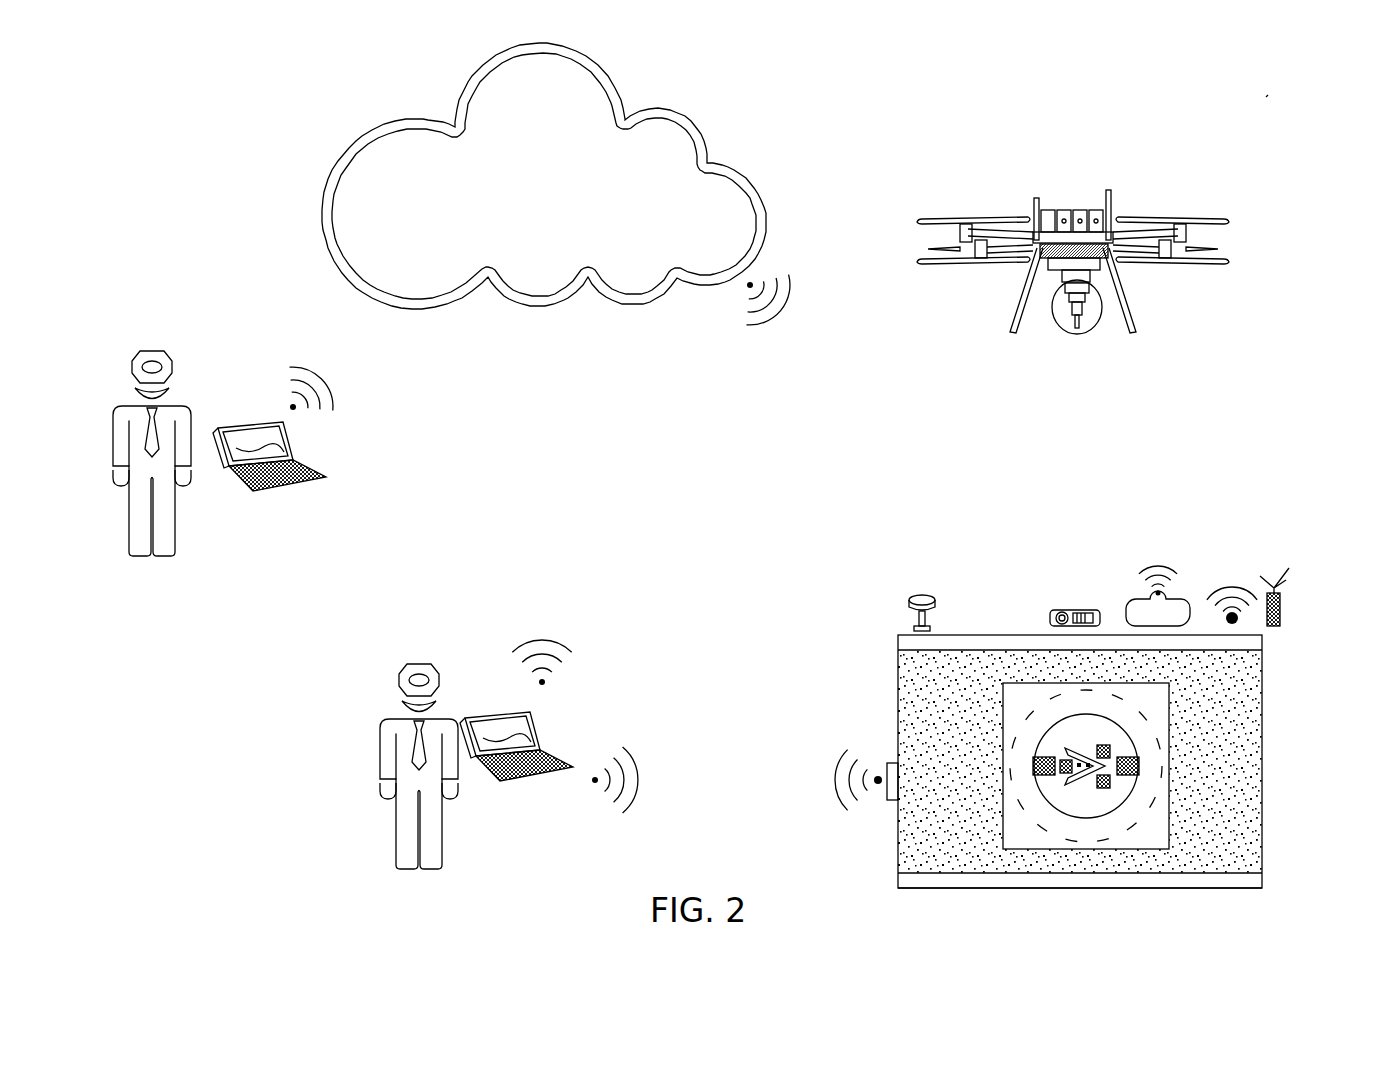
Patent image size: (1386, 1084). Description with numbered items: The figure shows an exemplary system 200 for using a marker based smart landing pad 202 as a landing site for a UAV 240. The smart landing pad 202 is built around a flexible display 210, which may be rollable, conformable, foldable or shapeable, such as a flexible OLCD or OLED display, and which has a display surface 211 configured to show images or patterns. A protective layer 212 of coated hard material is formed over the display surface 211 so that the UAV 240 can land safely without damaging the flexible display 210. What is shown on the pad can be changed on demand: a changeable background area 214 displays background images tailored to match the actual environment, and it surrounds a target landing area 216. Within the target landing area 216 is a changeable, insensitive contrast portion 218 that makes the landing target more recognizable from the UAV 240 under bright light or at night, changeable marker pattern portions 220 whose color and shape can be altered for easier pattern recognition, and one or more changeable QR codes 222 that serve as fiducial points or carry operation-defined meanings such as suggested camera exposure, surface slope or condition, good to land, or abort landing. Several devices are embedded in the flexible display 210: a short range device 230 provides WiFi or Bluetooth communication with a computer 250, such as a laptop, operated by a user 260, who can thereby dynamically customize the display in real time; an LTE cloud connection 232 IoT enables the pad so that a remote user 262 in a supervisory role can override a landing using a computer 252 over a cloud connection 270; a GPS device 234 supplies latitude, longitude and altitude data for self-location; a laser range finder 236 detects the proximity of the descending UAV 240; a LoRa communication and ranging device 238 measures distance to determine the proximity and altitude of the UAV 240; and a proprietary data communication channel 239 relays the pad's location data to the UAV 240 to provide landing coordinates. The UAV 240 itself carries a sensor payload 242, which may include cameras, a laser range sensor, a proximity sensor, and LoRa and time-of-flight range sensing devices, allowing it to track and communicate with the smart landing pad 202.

The system 200 is at (1272, 92).
The smart landing pad 202 is at (966, 903).
The flexible display 210 is at (1272, 716).
The display surface 211 is at (1250, 665).
The protective layer 212 is at (897, 672).
The background area 214 is at (920, 866).
The target landing area 216 is at (1162, 815).
The contrast portion 218 is at (1158, 762).
The marker pattern portions 220 is at (1012, 730).
The QR codes 222 is at (1130, 777).
The short range device 230 is at (887, 800).
The LTE cloud connection 232 is at (1128, 596).
The GPS device 234 is at (921, 594).
The laser range finder 236 is at (1055, 607).
The LoRa communication and ranging device 238 is at (1283, 608).
The proprietary data communication channel 239 is at (1228, 592).
The UAV 240 is at (1081, 209).
The sensor payload 242 is at (1087, 336).
The computer 250 is at (520, 781).
The computer 252 is at (274, 487).
The user 260 is at (381, 730).
The remote user 262 is at (139, 557).
The cloud connection 270 is at (459, 309).